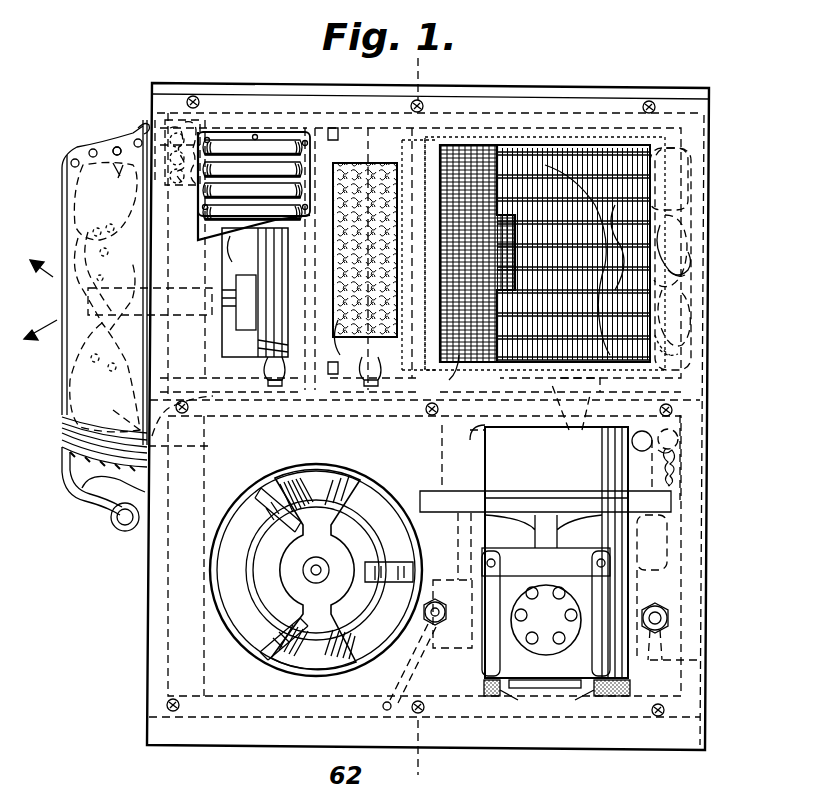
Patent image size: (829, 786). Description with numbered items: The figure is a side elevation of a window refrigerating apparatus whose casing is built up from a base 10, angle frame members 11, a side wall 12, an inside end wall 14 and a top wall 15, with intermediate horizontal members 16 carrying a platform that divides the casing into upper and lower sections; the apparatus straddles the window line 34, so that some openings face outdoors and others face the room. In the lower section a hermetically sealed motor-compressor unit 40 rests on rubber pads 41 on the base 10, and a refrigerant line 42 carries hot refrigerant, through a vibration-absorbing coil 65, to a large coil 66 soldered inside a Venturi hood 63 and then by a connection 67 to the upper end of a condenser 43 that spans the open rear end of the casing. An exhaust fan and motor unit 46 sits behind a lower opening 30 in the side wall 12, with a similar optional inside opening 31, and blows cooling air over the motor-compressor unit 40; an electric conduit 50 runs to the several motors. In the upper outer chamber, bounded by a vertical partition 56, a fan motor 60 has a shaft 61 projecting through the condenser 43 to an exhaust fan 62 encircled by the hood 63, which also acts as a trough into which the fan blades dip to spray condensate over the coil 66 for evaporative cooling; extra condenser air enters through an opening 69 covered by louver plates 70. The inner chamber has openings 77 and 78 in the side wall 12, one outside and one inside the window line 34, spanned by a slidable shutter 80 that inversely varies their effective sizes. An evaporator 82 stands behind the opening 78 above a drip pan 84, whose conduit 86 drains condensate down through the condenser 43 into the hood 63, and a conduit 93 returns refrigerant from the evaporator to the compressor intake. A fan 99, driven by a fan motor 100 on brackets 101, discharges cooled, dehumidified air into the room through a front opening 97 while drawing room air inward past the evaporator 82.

The base 10 is at (605, 747).
The angle frame members 11 is at (693, 552).
The side wall 12 is at (220, 665).
The inside end wall 14 is at (704, 408).
The top wall 15 is at (496, 93).
The intermediate horizontal members 16 is at (298, 405).
The opening 30 is at (385, 502).
The opening 31 is at (485, 446).
The window line 34 is at (428, 78).
The motor-compressor unit 40 is at (500, 474).
The rubber pads 41 is at (582, 678).
The refrigerant line 42 is at (82, 488).
The condenser 43 is at (200, 117).
The exhaust fan and motor unit 46 is at (243, 607).
The electric conduit 50 is at (673, 484).
The vertical partition 56 is at (365, 167).
The fan motor 60 is at (378, 234).
The shaft 61 is at (238, 284).
The exhaust fan 62 is at (100, 202).
The Venturi hood 63 is at (88, 145).
The coil 65 is at (112, 523).
The coil 66 is at (117, 146).
The connection 67 is at (141, 118).
The opening 69 is at (222, 254).
The louver plates 70 is at (270, 143).
The opening 77 is at (335, 318).
The opening 78 is at (457, 378).
The shutter 80 is at (504, 153).
The evaporator 82 is at (546, 175).
The drip pan 84 is at (705, 372).
The conduit 86 is at (196, 427).
The conduit 93 is at (657, 581).
The opening 97 is at (704, 163).
The fan 99 is at (647, 233).
The fan motor 100 is at (690, 283).
The brackets 101 is at (575, 418).